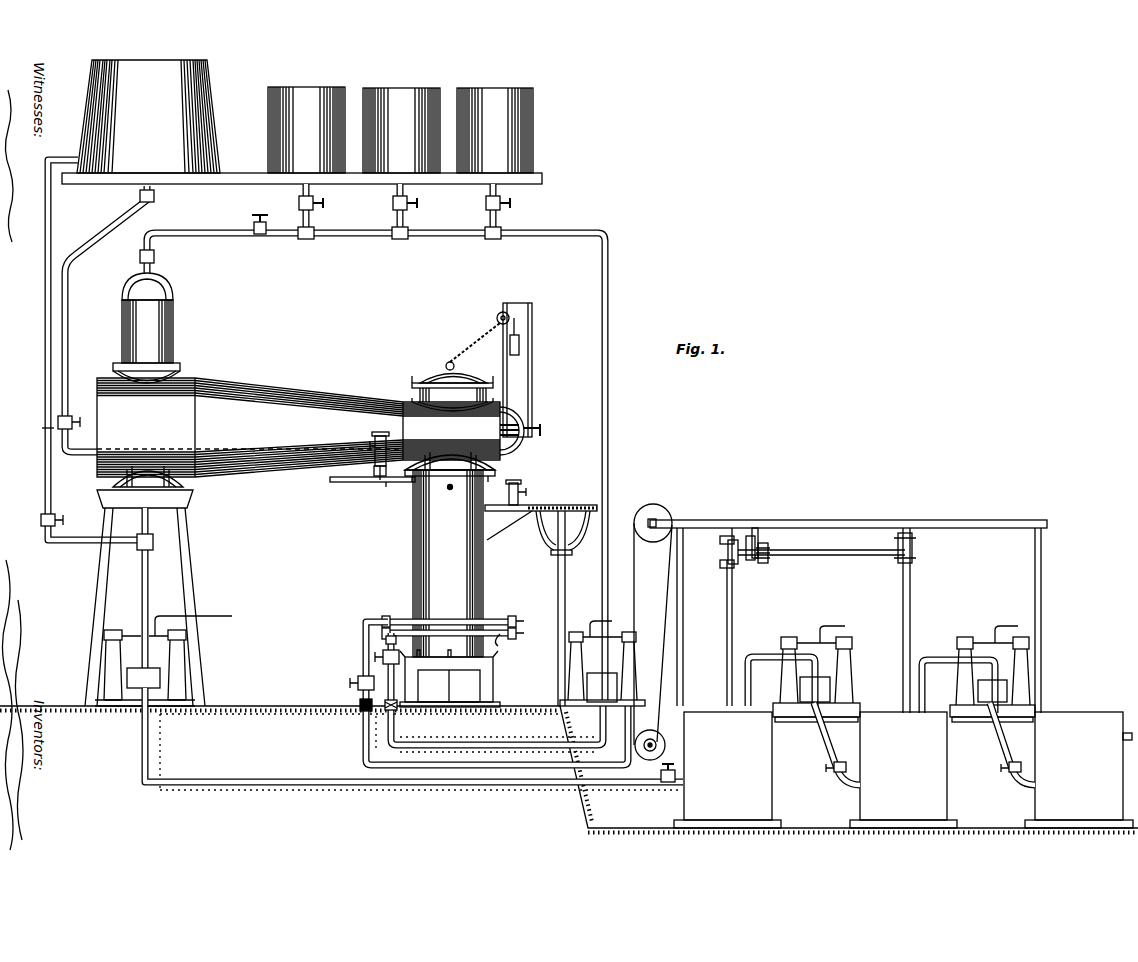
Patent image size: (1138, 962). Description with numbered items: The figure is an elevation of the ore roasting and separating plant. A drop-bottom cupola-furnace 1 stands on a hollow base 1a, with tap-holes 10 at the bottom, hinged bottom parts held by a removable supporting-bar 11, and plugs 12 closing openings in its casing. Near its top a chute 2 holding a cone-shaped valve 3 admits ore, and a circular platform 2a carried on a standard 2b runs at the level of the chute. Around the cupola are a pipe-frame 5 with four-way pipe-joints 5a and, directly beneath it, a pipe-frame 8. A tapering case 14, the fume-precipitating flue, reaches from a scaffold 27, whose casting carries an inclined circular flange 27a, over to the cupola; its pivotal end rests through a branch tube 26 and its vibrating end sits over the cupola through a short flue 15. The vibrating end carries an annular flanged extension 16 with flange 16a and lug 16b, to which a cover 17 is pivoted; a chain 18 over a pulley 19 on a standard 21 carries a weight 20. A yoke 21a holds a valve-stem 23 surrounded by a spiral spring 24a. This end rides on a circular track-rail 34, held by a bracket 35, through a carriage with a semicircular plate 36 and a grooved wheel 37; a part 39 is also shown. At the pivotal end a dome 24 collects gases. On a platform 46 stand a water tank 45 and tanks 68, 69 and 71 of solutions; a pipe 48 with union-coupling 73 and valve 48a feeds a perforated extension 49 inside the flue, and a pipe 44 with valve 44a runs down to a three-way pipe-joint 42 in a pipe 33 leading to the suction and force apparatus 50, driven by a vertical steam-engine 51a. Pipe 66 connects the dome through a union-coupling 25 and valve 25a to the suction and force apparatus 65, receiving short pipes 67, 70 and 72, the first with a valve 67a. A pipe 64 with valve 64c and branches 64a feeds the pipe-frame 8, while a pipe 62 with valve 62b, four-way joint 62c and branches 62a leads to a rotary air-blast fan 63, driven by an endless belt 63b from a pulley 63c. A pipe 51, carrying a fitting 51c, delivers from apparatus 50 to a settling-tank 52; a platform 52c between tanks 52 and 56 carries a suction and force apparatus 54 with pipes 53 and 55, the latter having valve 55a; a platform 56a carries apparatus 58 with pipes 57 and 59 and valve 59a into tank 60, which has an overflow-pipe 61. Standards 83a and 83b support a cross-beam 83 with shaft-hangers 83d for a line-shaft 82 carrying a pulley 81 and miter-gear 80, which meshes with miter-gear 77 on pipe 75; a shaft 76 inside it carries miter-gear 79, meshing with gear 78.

The drop-bottom cupola-furnace 1 is at (448, 563).
The hollow base 1a is at (460, 678).
The chute 2 is at (541, 593).
The circular platform 2a is at (562, 593).
The standard 2b is at (558, 593).
The cone-shaped valve 3 is at (530, 500).
The pipe-frame 5 is at (456, 624).
The four-way pipe-joint 5a is at (526, 623).
The pipe-frame 8 is at (501, 646).
The tap-holes 10 is at (460, 660).
The removable supporting-bar 11 is at (449, 686).
The plug 12 is at (414, 482).
The case 14 is at (298, 427).
The short flue 15 is at (450, 461).
The annular flanged extension 16 is at (445, 383).
The flange 16a is at (407, 369).
The lug 16b is at (483, 370).
The cover 17 is at (444, 354).
The chain 18 is at (475, 340).
The pulley 19 is at (496, 309).
The weight 20 is at (522, 344).
The standard 21 is at (530, 370).
The yoke 21a is at (537, 430).
The valve-stem 23 is at (542, 430).
The dome 24 is at (146, 328).
The spiral spring 24a is at (513, 408).
The union-coupling 25 is at (372, 244).
The valve 25a is at (261, 240).
The branch tube 26 is at (148, 476).
The scaffold 27 is at (150, 607).
The circular flange 27a is at (145, 498).
The externally-threaded pipe 33 is at (146, 588).
The circular track-rail 34 is at (374, 484).
The bracket 35 is at (402, 484).
The semicircular plate 36 is at (378, 449).
The grooved wheel 37 is at (388, 470).
The handle 39 is at (364, 446).
The three-way pipe-joint 42 is at (153, 543).
The pipe 44 is at (74, 351).
The valve 44a is at (35, 518).
The tank 45 is at (148, 116).
The platform 46 is at (302, 188).
The pipe 48 is at (117, 319).
The valve 48a is at (74, 408).
The perforated extension 49 is at (248, 440).
The suction and force apparatus 50 is at (143, 678).
The pipe 51 is at (414, 748).
The vertical steam-engine 51a is at (108, 648).
The valve 51c is at (655, 786).
The settling-tank 52 is at (727, 770).
The platform 52c is at (816, 720).
The pipe 53 is at (768, 655).
The suction and force apparatus 54 is at (815, 689).
The pipe 55 is at (833, 749).
The valve 55a is at (826, 744).
The settling-tank 56 is at (903, 770).
The platform 56a is at (992, 722).
The pipe 57 is at (946, 657).
The suction and force apparatus 58 is at (992, 691).
The pipe 59 is at (1007, 749).
The valve 59a is at (1006, 746).
The settling-tank 60 is at (1079, 770).
The overflow-pipe 61 is at (1123, 736).
The pipe 62 is at (460, 693).
The section of pipe 62a is at (348, 690).
The valve 62b is at (347, 662).
The four-way pipe-joint 62c is at (358, 685).
The rotary air-blast fan 63 is at (651, 621).
The endless belt 63b is at (655, 560).
The pulley 63c is at (660, 512).
The pipe 64 is at (446, 696).
The sections of pipe 64a is at (368, 716).
The valve 64c is at (381, 656).
The suction and force apparatus 65 is at (602, 663).
The pipe 66 is at (610, 421).
The short section of pipe 67 is at (314, 211).
The valve 67a is at (295, 215).
The tank 68 is at (306, 130).
The tank 69 is at (401, 130).
The short pipe 70 is at (393, 215).
The tank 71 is at (495, 130).
The short section of pipe 72 is at (486, 215).
The union-coupling 73 is at (154, 198).
The pipe 75 is at (727, 662).
The shaft 76 is at (734, 528).
The miter-gear 77 is at (720, 566).
The clutch 78 is at (728, 553).
The miter-gear 79 is at (720, 540).
The miter-gear 80 is at (750, 560).
The pulley 81 is at (768, 562).
The line-shaft 82 is at (832, 558).
The cross-beam 83 is at (860, 603).
The standard 83a is at (684, 605).
The standard 83b is at (1041, 578).
The shaft-hangers 83d is at (832, 528).